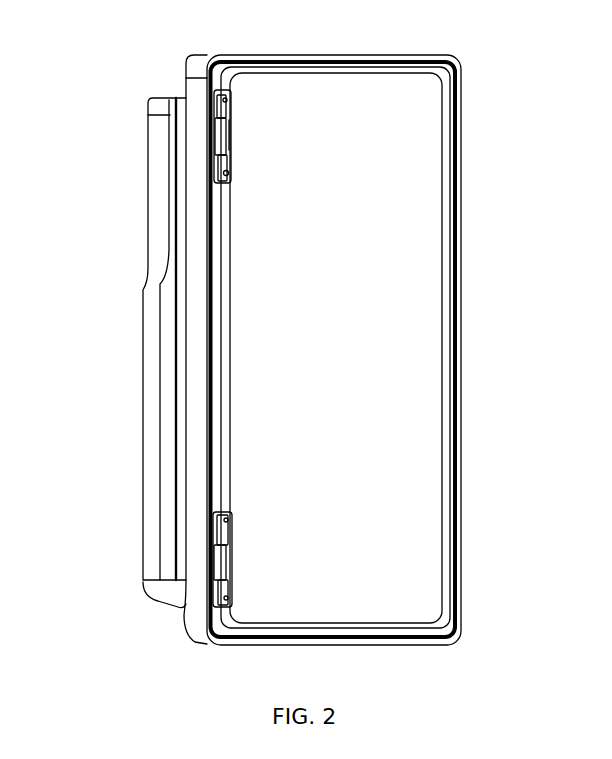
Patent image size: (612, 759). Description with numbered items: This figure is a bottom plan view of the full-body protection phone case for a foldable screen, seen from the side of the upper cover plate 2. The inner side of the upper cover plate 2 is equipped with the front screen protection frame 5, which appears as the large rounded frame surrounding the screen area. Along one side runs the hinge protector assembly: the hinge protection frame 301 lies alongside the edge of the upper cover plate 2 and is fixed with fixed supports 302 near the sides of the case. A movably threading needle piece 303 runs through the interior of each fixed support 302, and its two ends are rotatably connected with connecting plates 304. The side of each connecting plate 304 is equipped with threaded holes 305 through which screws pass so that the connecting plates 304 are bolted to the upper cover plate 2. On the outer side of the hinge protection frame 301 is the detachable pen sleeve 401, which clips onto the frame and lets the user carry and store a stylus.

The upper cover plate 2 is at (458, 518).
The front screen protection frame 5 is at (448, 418).
The hinge protection frame 301 is at (197, 210).
The fixed support 302 is at (213, 137).
The movably threading needle piece 303 is at (216, 104).
The connecting plate 304 is at (233, 137).
The threaded hole 305 is at (227, 173).
The detachable pen sleeve 401 is at (162, 383).